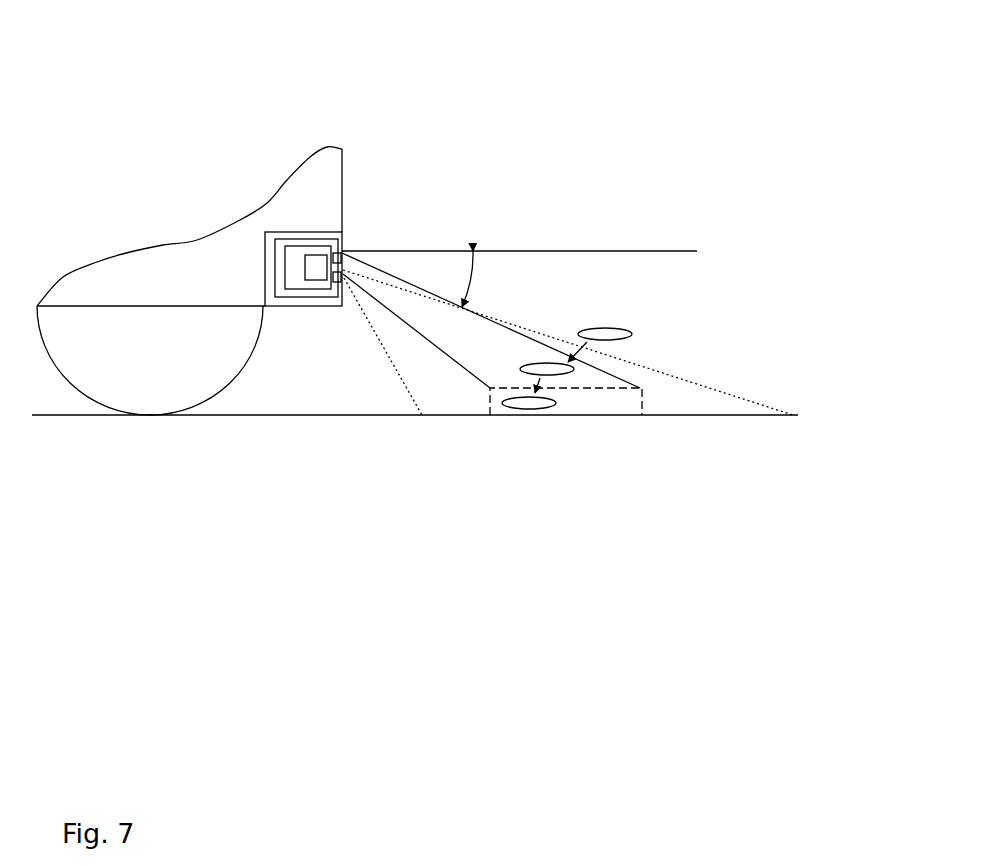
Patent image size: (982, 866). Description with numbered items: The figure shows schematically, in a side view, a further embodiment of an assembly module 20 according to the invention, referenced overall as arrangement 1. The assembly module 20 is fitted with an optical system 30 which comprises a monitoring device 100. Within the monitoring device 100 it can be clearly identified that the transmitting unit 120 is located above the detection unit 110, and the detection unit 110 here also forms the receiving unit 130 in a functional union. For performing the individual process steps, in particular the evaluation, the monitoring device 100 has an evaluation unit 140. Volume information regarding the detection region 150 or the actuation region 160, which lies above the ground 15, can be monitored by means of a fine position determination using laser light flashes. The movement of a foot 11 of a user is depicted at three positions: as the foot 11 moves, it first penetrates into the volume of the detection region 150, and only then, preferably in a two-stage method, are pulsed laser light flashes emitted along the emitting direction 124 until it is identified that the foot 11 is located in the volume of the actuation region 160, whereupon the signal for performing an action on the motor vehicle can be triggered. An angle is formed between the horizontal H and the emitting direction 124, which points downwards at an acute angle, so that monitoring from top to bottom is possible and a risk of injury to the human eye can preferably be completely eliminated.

The agricultural vehicle system 1 is at (157, 92).
The monitoring device 100 is at (267, 253).
The optical system 30 is at (292, 232).
The assembly module 20 is at (305, 232).
The detection unit 110 is at (345, 281).
The evaluation unit 140 is at (313, 276).
The transmitting unit 120 is at (342, 252).
The receiving unit 130 is at (345, 278).
The emitting direction 124 is at (427, 286).
The horizontal H is at (647, 251).
The detection region 150 is at (702, 403).
The ground surface 15 is at (793, 415).
The actuation region 160 is at (488, 400).
The foot 11 is at (615, 330).